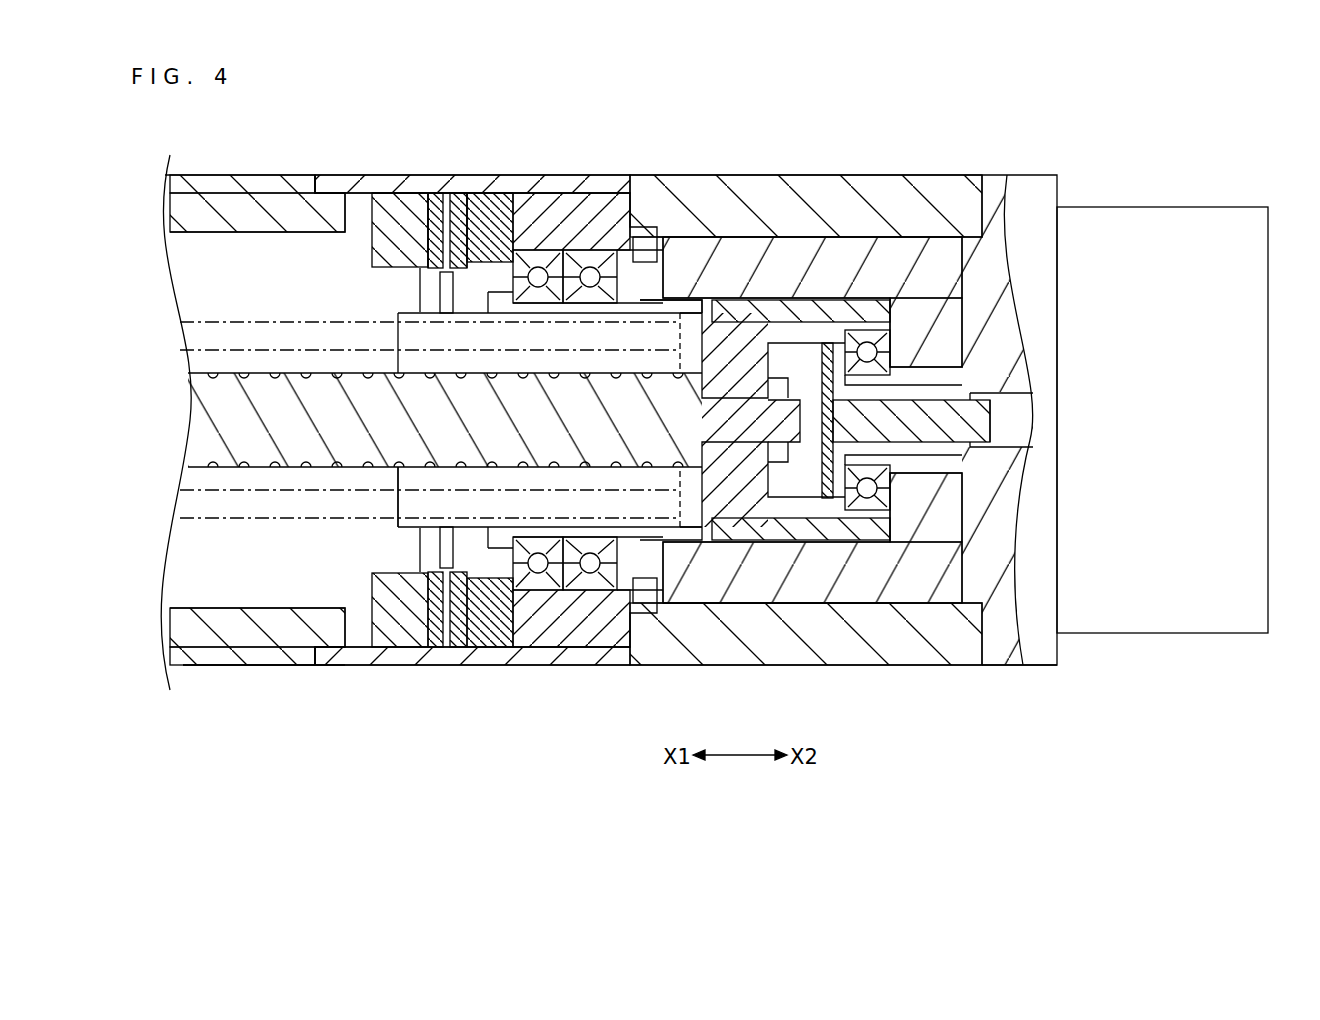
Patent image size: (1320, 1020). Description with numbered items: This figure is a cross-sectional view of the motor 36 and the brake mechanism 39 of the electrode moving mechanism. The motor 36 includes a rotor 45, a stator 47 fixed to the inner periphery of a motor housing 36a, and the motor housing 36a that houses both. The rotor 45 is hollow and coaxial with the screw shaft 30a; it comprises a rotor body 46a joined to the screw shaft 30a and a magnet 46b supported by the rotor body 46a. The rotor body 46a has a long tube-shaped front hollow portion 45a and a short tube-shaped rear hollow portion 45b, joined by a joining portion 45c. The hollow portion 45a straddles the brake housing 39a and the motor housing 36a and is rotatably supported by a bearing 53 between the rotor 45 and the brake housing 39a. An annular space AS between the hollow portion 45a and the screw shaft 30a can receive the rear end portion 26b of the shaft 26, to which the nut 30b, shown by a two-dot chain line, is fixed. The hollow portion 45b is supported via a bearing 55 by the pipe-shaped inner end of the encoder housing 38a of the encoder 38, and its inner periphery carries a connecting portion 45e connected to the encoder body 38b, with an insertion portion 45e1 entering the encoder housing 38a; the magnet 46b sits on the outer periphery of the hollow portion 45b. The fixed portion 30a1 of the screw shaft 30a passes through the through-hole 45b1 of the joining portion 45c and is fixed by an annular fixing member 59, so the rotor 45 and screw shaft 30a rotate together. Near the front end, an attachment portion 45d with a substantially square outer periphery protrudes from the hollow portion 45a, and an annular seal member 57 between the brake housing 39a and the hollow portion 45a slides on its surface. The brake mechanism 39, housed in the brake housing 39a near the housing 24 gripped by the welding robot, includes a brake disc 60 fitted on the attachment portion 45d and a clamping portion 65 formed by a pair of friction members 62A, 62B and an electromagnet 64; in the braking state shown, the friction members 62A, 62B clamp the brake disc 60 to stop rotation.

The housing 24 is at (252, 660).
The shaft 26 is at (230, 505).
The rear end portion 26b is at (548, 512).
The screw shaft 30a is at (535, 385).
The fixed portion 30a1 is at (747, 403).
The nut 30b is at (603, 478).
The motor 36 is at (960, 155).
The motor housing 36a is at (745, 650).
The encoder 38 is at (1150, 203).
The encoder housing 38a is at (1010, 665).
The encoder body 38b is at (1010, 393).
The brake mechanism 39 is at (540, 93).
The brake housing 39a is at (401, 665).
The rotor 45 is at (767, 100).
The hollow portion 45a is at (644, 298).
The hollow portion 45b is at (822, 320).
The through-hole 45b1 is at (700, 422).
The joining portion 45c is at (727, 310).
The attachment portion 45d is at (418, 285).
The connecting portion 45e is at (933, 447).
The insertion portion 45e1 is at (921, 420).
The rotor body 46a is at (586, 254).
The magnet 46b is at (765, 300).
The stator 47 is at (791, 218).
The bearing 53 is at (535, 250).
The bearing 55 is at (867, 330).
The annular seal member 57 is at (418, 557).
The annular fixing member 59 is at (772, 460).
The brake disc 60 is at (500, 240).
The friction member 62A is at (432, 205).
The friction member 62B is at (460, 205).
The electromagnet 64 is at (395, 215).
The clamping portion 65 is at (505, 133).
The annular space AS is at (460, 480).